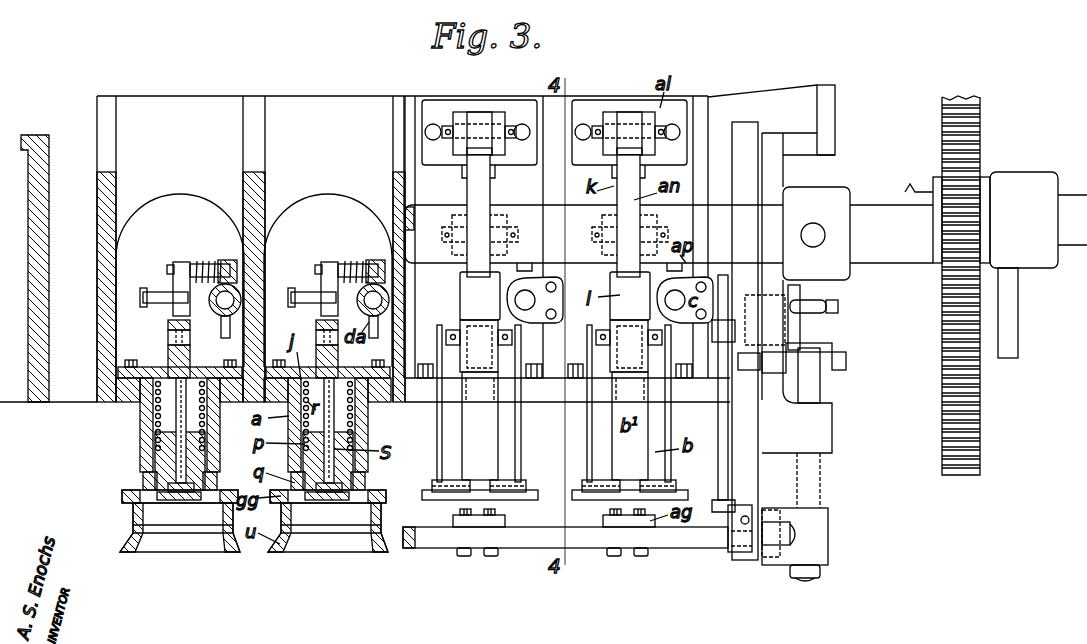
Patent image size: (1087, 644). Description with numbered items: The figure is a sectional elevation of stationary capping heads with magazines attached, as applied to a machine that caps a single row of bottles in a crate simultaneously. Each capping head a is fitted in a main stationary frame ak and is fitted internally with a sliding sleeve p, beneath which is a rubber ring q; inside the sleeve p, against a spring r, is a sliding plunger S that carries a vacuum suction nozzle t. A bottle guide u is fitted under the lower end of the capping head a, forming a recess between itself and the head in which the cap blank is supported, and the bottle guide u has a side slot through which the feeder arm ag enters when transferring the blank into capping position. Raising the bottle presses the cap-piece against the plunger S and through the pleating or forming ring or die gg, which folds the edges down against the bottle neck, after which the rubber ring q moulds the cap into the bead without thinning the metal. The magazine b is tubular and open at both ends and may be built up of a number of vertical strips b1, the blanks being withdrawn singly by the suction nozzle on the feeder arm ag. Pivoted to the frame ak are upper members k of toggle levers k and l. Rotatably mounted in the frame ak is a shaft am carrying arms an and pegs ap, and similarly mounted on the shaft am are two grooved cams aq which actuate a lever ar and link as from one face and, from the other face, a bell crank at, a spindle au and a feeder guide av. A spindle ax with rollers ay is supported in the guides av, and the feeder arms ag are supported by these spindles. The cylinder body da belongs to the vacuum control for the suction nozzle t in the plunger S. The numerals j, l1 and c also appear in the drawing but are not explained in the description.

The capping head a is at (141, 416).
The sliding sleeve p is at (157, 444).
The rubber ring q is at (147, 483).
The spring r is at (160, 402).
The piston rod j is at (153, 380).
The cylinder body da is at (221, 322).
The sliding plunger S is at (186, 449).
The pleating or forming ring or die gg is at (133, 496).
The bottle guide u is at (132, 544).
The toggle lever l is at (183, 495).
The suction nozzle t is at (331, 495).
The main stationary frame ak is at (405, 152).
The bearing housing al is at (442, 108).
The toggle lever upper member k is at (464, 186).
The arm an is at (484, 200).
The shaft am is at (746, 223).
The peg ap is at (531, 263).
The sleeve l1 is at (470, 295).
The cam c is at (535, 300).
The magazine b is at (505, 452).
The vertical strip b1 is at (480, 426).
The feeder arm ag is at (500, 521).
The spindle ax is at (690, 537).
The grooved cam aq is at (752, 138).
The bell crank at is at (800, 328).
The spindle au is at (815, 396).
The lever ar is at (722, 412).
The link as is at (737, 512).
The roller ay is at (769, 512).
The feeder guide av is at (815, 521).